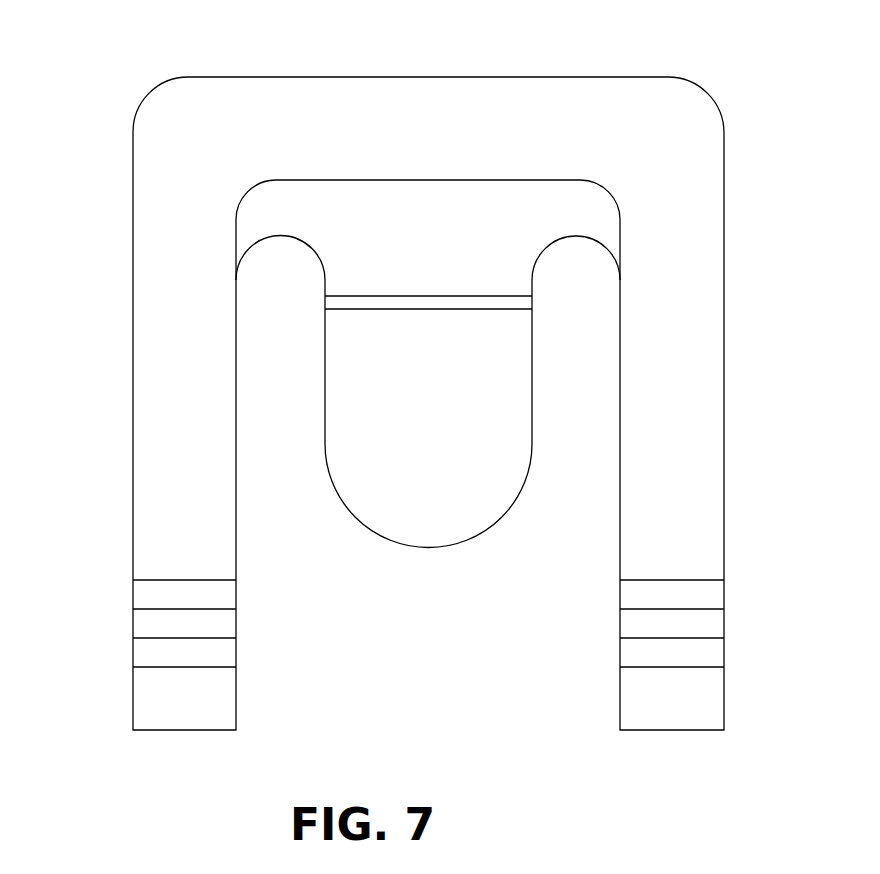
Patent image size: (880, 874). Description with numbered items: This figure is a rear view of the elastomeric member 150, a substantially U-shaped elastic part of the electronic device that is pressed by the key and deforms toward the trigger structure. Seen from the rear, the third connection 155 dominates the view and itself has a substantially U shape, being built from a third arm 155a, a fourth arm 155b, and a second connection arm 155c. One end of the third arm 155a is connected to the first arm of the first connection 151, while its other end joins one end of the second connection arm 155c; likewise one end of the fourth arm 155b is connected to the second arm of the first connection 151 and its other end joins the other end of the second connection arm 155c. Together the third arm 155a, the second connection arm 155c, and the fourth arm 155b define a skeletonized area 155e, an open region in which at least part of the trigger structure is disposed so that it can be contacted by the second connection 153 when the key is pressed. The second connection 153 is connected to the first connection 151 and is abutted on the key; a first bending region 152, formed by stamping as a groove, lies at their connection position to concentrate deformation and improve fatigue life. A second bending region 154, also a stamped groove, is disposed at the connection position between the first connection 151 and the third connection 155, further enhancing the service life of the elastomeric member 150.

The elastomeric member 150 is at (158, 118).
The first connection 151 is at (282, 205).
The first bending region 152 is at (528, 298).
The second connection 153 is at (407, 493).
The second bending region 154 is at (657, 617).
The third connection 155 is at (148, 364).
The third arm 155a is at (645, 533).
The fourth arm 155b is at (153, 492).
The second connection arm 155c is at (383, 100).
The skeletonized area 155e is at (303, 543).